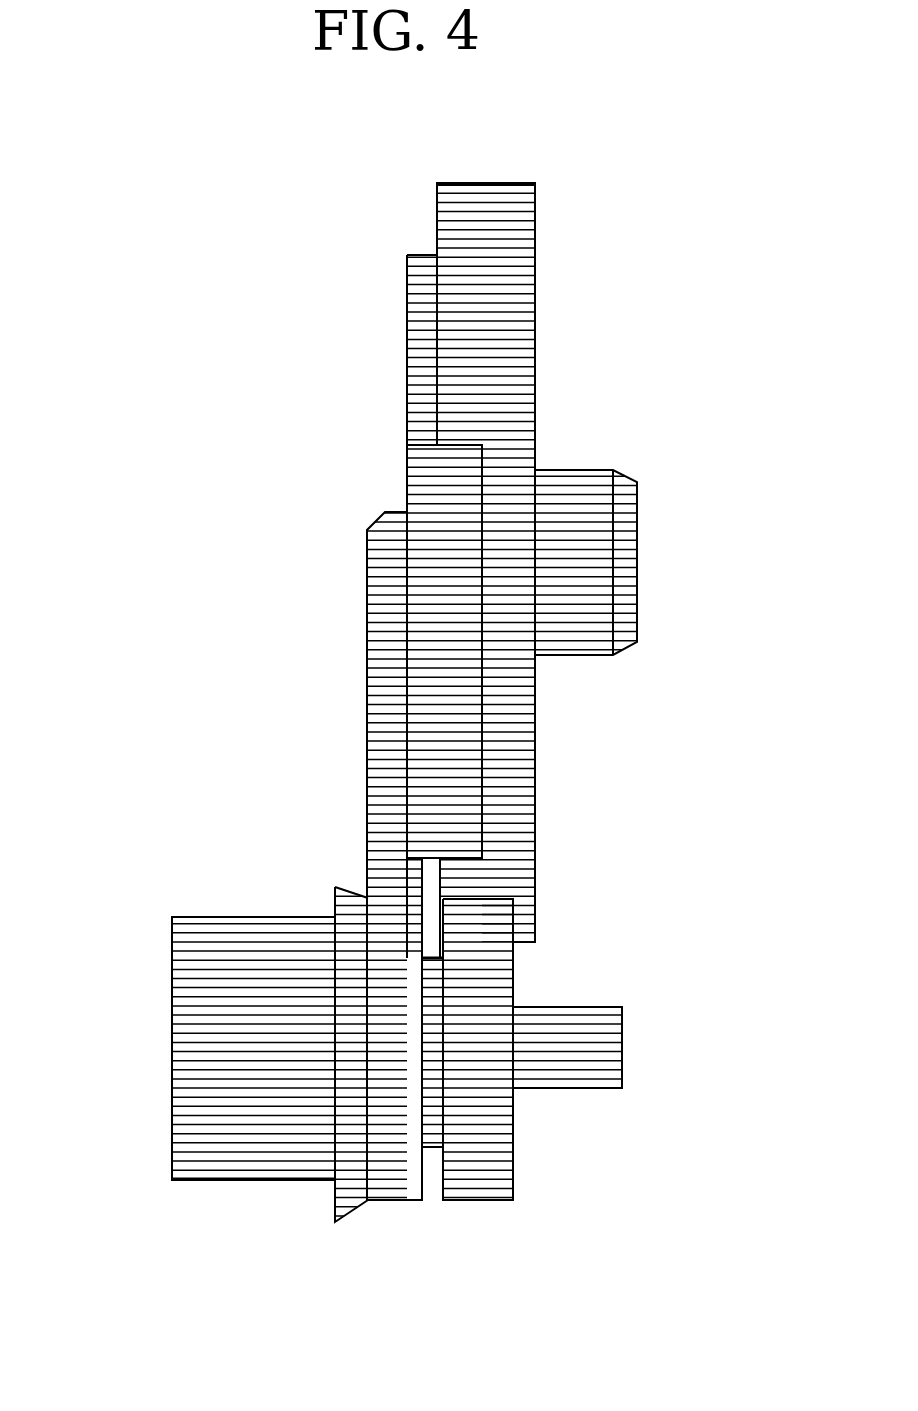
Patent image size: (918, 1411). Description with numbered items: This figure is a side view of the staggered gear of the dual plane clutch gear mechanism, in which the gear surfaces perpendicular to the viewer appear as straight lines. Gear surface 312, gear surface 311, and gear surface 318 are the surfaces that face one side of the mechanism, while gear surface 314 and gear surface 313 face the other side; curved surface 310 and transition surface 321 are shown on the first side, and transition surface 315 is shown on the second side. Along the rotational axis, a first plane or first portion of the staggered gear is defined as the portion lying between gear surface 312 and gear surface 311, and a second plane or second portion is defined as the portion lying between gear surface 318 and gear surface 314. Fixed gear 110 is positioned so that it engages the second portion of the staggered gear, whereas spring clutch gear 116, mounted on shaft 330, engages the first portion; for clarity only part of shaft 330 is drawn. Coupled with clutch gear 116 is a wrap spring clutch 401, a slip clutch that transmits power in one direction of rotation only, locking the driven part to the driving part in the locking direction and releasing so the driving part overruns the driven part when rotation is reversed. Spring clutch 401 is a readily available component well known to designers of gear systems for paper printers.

The fixed gear 110 is at (468, 1200).
The spring clutch gear 116 is at (394, 1200).
The curved surface 310 is at (384, 515).
The gear surface 311 is at (395, 346).
The gear surface 312 is at (355, 733).
The gear surface 313 is at (535, 838).
The gear surface 314 is at (548, 308).
The transition surface 315 is at (517, 646).
The gear surface 318 is at (425, 211).
The transition surface 321 is at (406, 255).
The shaft 330 is at (603, 1003).
The wrap spring clutch 401 is at (172, 1040).